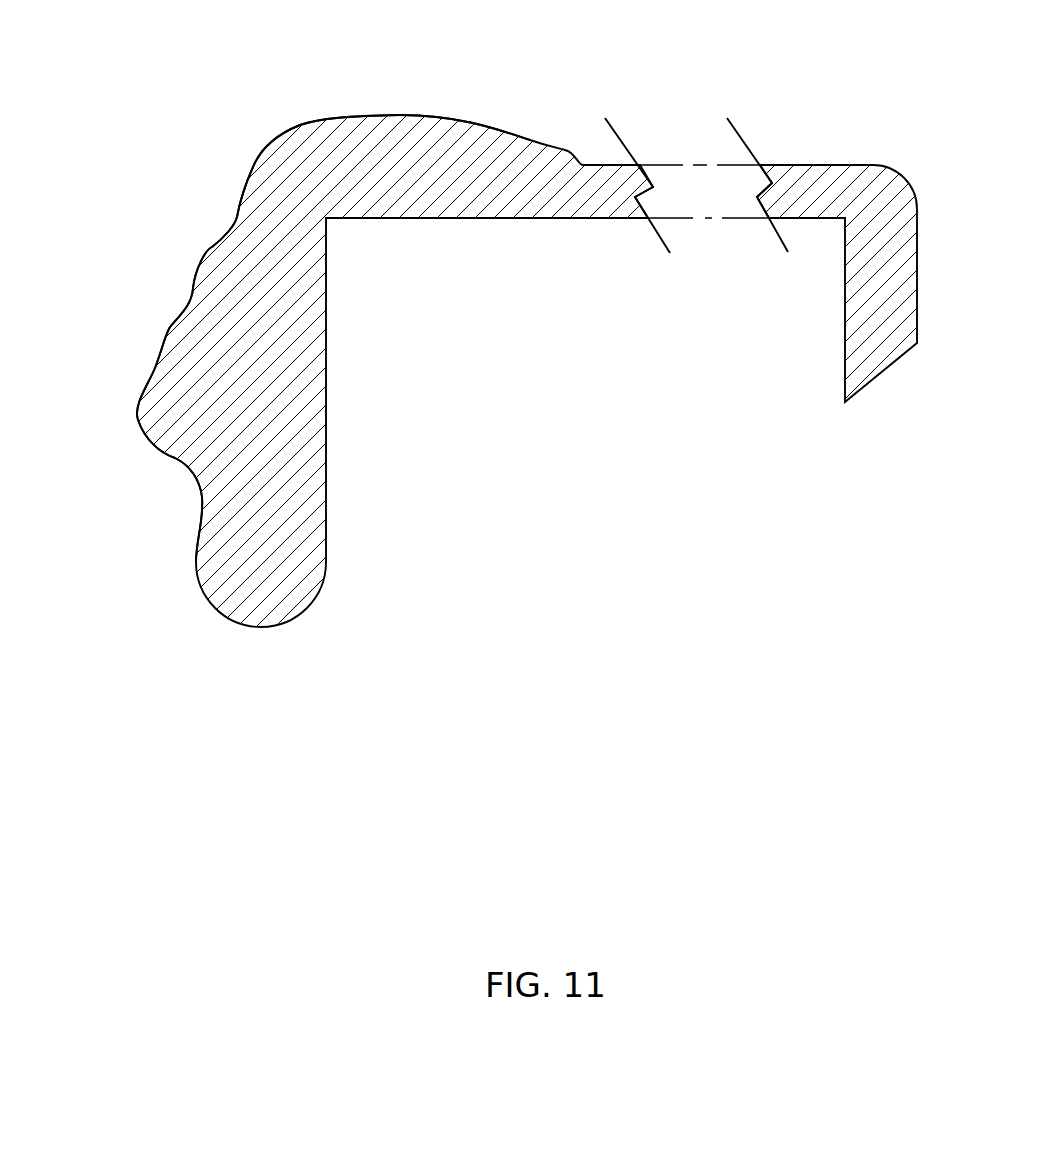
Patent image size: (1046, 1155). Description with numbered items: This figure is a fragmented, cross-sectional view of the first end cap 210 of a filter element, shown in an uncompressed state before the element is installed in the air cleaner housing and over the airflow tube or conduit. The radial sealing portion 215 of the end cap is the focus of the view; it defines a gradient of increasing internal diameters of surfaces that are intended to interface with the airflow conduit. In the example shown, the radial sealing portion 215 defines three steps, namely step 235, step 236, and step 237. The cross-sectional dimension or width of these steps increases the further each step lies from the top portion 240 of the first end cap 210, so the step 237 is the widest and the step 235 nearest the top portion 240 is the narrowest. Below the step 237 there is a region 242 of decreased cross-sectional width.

The first end cap 210 is at (409, 125).
The radial sealing portion 215 is at (96, 235).
The step 235 is at (207, 257).
The step 236 is at (165, 333).
The step 237 is at (138, 403).
The top portion 240 is at (318, 123).
The region of decreased cross-sectional width 242 is at (175, 458).